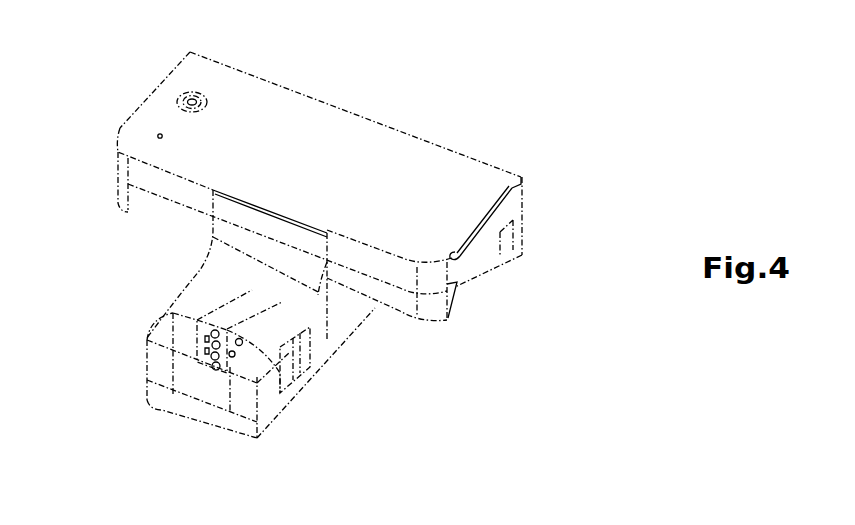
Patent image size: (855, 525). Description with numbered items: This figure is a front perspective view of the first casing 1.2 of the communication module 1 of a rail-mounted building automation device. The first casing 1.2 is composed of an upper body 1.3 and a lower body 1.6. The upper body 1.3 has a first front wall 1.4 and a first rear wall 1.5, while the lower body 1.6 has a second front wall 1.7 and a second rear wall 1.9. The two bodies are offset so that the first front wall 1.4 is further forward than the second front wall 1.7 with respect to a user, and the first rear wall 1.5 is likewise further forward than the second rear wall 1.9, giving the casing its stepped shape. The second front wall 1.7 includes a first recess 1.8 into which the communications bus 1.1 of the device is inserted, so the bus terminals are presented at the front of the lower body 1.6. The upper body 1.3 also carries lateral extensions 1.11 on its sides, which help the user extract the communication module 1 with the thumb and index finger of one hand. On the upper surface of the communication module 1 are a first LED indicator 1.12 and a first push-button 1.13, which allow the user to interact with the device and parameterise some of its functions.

The communication module 1 is at (605, 97).
The communications bus 1.1 is at (202, 328).
The first casing 1.2 is at (551, 157).
The upper body 1.3 is at (508, 256).
The first front wall 1.4 is at (228, 80).
The first rear wall 1.5 is at (488, 277).
The lower body 1.6 is at (339, 362).
The second front wall 1.7 is at (189, 302).
The first recess 1.8 is at (197, 385).
The second rear wall 1.9 is at (282, 402).
The lateral extensions 1.11 is at (155, 88).
The first LED indicator 1.12 is at (158, 137).
The first push-button 1.13 is at (192, 102).